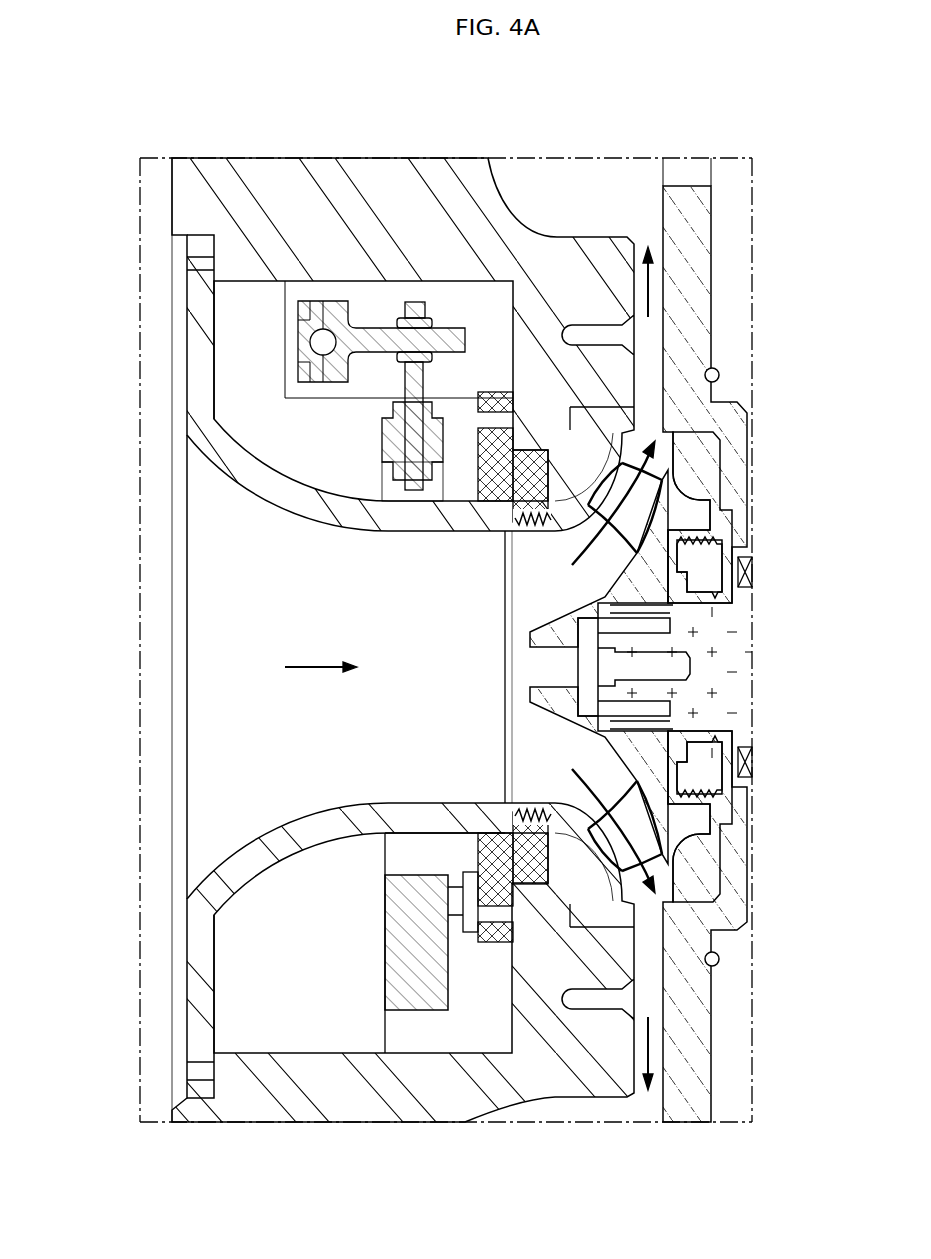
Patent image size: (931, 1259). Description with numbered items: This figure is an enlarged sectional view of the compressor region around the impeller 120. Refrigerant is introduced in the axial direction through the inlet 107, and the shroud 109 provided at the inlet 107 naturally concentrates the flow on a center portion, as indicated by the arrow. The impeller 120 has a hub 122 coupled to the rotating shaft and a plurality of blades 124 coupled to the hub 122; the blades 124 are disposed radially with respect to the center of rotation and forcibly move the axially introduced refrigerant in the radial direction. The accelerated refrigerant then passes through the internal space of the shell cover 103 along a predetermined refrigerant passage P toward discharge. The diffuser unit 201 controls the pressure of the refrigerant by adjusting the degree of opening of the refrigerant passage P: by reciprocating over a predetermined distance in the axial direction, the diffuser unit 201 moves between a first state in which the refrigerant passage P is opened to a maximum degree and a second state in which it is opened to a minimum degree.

The shell cover 103 is at (284, 172).
The diffuser unit 201 is at (418, 278).
The inlet 107 is at (213, 667).
The shroud 109 is at (195, 985).
The impeller 120 is at (560, 848).
The hub 122 is at (650, 595).
The blades 124 is at (660, 467).
The refrigerant passage P is at (655, 340).